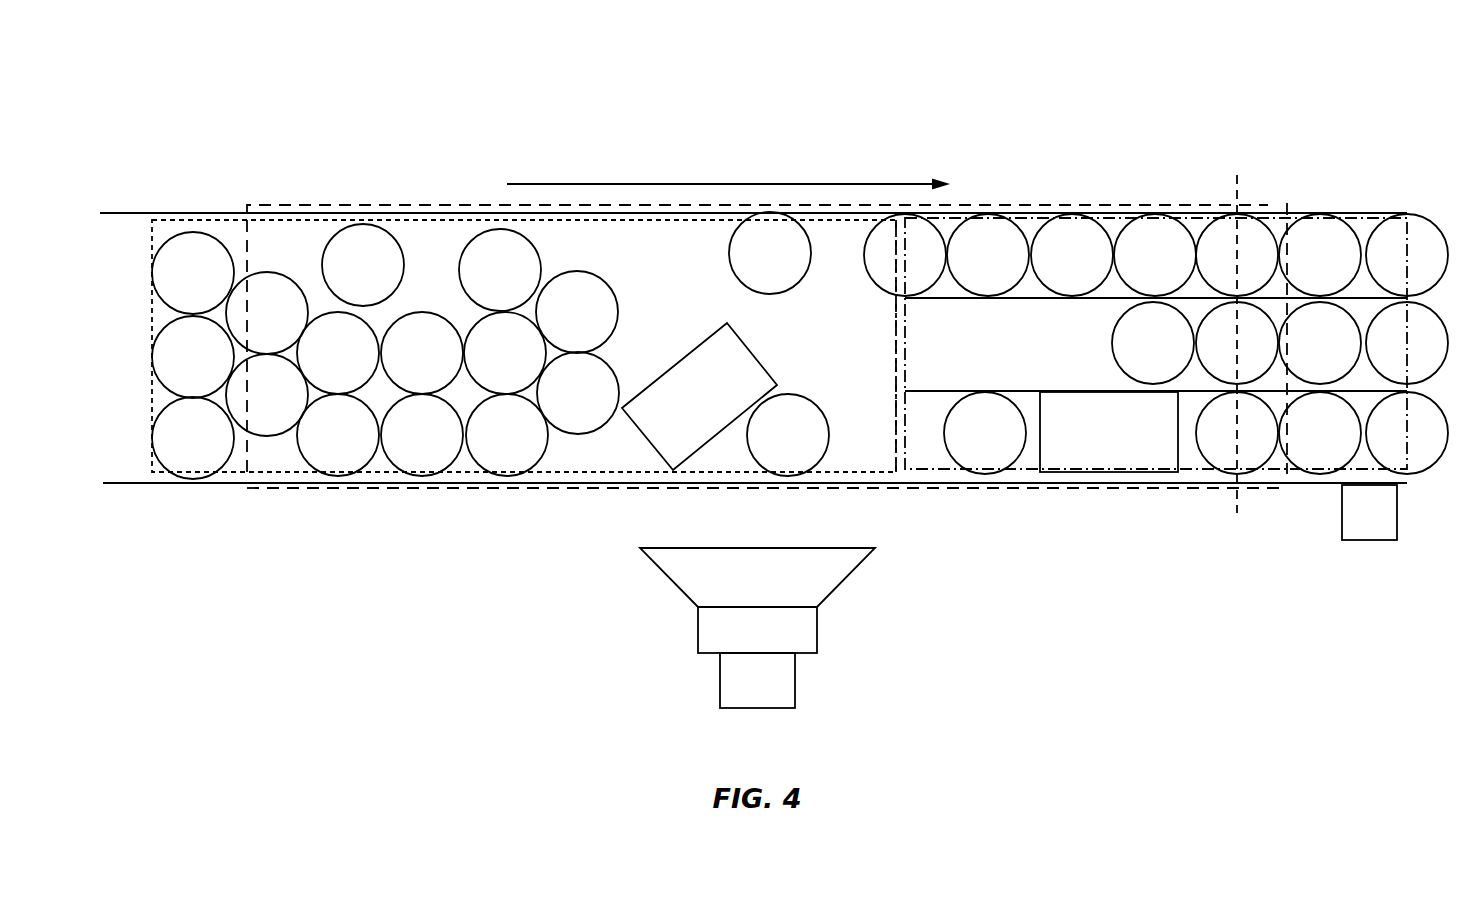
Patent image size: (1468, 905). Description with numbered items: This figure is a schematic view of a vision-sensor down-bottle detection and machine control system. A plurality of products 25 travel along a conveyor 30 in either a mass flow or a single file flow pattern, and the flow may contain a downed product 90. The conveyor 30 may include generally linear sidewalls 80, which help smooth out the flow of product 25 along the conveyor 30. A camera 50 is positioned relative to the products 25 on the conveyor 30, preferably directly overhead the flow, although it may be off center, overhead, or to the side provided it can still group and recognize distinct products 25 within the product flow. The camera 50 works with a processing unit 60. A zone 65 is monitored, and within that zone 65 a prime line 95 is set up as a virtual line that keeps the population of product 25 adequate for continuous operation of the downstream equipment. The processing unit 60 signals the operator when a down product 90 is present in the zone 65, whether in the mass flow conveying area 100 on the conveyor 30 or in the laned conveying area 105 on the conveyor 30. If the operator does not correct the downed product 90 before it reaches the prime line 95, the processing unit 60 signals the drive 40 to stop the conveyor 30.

The product 25 is at (363, 242).
The conveyor 30 is at (596, 240).
The drive 40 is at (1355, 552).
The camera 50 is at (836, 627).
The processing unit 60 is at (818, 682).
The zone 65 is at (403, 501).
The linear sidewalls 80 is at (131, 498).
The downed product 90 is at (1118, 448).
The prime line 95 is at (1237, 163).
The mass flow conveying area 100 is at (178, 205).
The laned conveying area 105 is at (1361, 203).